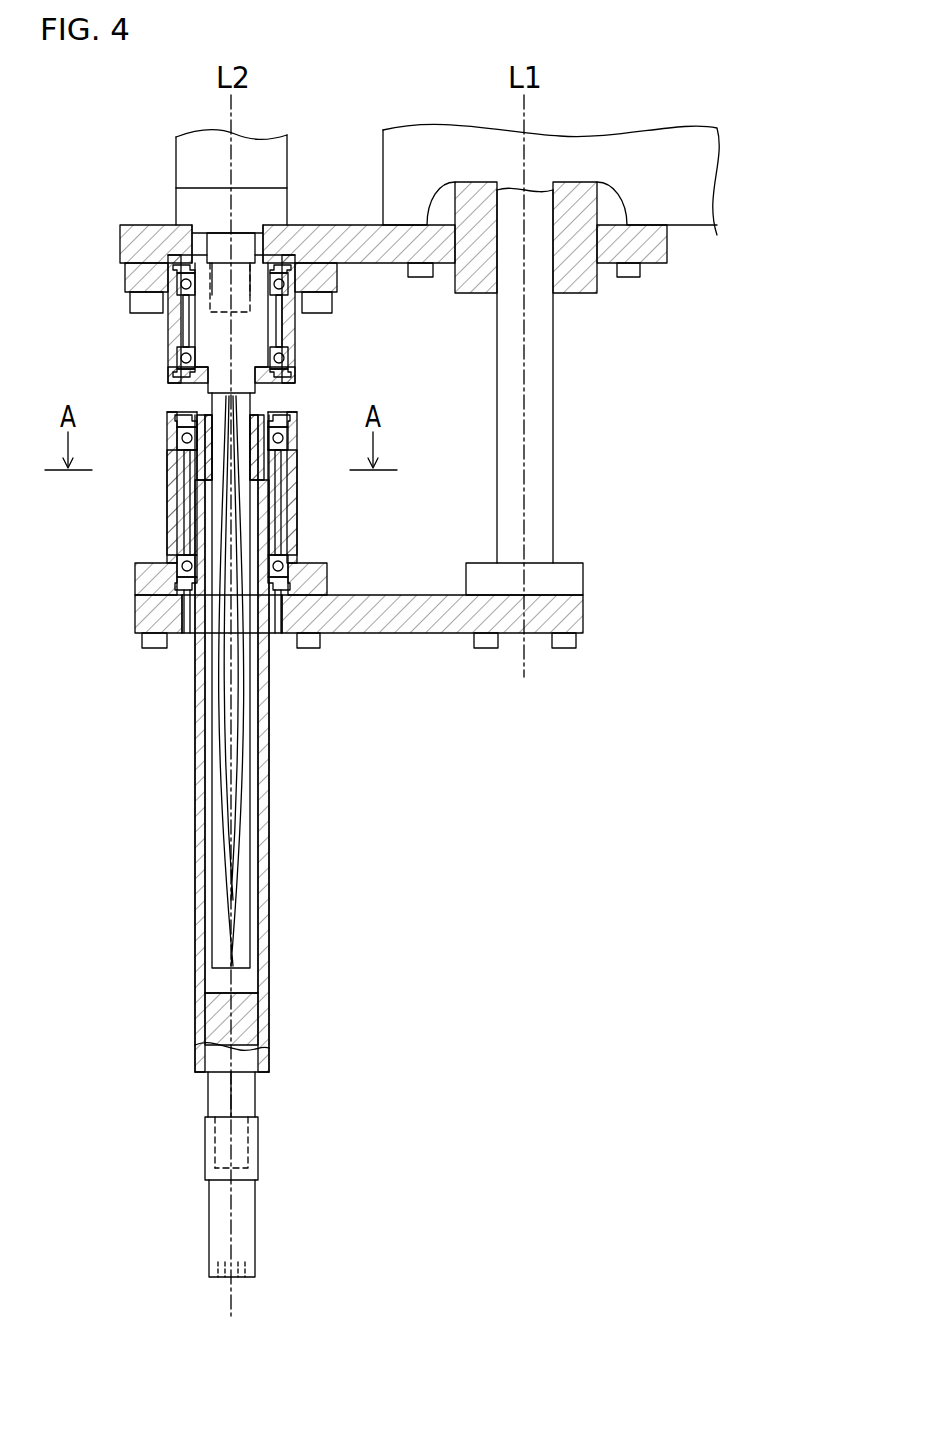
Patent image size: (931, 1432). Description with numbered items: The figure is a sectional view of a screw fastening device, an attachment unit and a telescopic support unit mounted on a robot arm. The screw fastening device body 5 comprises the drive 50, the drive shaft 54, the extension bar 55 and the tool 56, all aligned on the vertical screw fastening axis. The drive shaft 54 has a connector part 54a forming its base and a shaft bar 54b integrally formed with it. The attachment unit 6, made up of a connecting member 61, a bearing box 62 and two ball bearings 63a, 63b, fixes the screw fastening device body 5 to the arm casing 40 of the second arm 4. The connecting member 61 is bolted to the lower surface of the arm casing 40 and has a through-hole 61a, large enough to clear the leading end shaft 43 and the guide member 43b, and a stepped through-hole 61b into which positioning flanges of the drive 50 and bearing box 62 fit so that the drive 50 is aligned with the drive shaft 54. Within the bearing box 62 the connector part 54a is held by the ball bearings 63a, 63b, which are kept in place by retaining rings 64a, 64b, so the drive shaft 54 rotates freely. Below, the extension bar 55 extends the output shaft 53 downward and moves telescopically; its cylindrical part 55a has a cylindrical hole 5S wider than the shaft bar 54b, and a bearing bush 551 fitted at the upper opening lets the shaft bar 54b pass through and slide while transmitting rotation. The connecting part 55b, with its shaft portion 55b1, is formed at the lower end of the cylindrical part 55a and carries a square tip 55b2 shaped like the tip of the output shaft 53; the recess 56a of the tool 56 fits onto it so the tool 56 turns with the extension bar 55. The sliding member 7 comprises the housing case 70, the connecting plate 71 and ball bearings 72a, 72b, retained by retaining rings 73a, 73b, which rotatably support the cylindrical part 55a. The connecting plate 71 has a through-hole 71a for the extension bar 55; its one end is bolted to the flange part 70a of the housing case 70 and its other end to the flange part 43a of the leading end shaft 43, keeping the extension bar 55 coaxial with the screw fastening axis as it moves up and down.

The second arm 4 is at (551, 331).
The arm casing 40 is at (637, 147).
The leading end shaft 43 is at (555, 438).
The flange part 43a is at (576, 584).
The guide member 43b is at (575, 295).
The screw fastening device body 5 is at (203, 142).
The drive 50 is at (183, 166).
The output shaft 53 is at (212, 300).
The drive shaft 54 is at (277, 680).
The connector part 54a is at (268, 325).
The shaft bar 54b is at (242, 812).
The cylindrical hole 5S is at (258, 862).
The extension bar 55 is at (248, 743).
The cylindrical part 55a is at (194, 860).
The connecting part 55b is at (207, 1098).
The lower end shaft portion 55b1 is at (250, 1098).
The tip 55b2 is at (246, 1143).
The tool 56 is at (195, 1197).
The recess 56a is at (216, 1150).
The attachment unit 6 is at (355, 296).
The connecting member 61 is at (370, 270).
The through-hole 61a is at (600, 270).
The through-hole 61b is at (268, 236).
The bearing box 62 is at (297, 368).
The ball bearing 63a is at (176, 276).
The ball bearing 63b is at (178, 356).
The retaining ring 64a is at (292, 262).
The retaining ring 64b is at (286, 384).
The sliding member 7 is at (313, 542).
The housing case 70 is at (167, 522).
The flange part 70a is at (140, 588).
The connecting plate 71 is at (423, 638).
The through-hole 71a is at (190, 640).
The ball bearing 72a is at (178, 438).
The ball bearing 72b is at (289, 565).
The retaining ring 73a is at (182, 422).
The retaining ring 73b is at (282, 620).
The bearing bush 551 is at (262, 478).